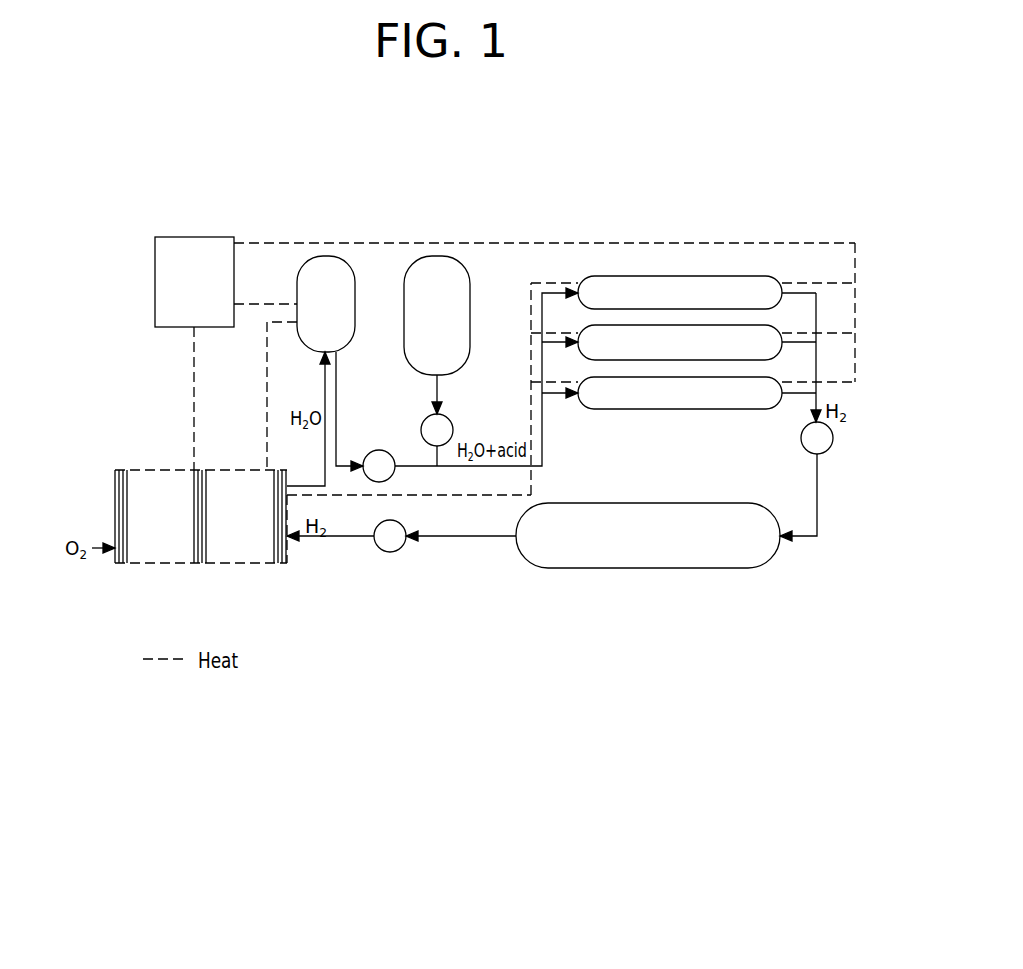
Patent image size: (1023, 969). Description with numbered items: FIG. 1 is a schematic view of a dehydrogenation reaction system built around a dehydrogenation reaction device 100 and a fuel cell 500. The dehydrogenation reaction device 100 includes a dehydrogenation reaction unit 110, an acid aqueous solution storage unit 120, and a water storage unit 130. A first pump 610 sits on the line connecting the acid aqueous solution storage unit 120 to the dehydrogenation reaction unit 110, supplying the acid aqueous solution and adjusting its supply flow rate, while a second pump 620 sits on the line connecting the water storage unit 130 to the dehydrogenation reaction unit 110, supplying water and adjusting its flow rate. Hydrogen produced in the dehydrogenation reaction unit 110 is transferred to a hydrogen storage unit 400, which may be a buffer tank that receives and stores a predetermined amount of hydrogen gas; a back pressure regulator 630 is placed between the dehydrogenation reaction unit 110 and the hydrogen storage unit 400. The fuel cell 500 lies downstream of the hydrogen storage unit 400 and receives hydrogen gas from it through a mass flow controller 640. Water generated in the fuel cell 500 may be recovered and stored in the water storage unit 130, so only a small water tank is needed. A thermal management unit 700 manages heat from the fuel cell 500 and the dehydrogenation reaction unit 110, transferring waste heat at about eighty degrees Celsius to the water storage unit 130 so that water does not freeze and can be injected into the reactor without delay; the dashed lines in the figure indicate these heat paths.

The dehydrogenation reaction device 100 is at (636, 429).
The dehydrogenation reaction unit 110 is at (700, 309).
The acid aqueous solution storage unit 120 is at (437, 256).
The water storage unit 130 is at (327, 256).
The hydrogen storage unit 400 is at (655, 569).
The fuel cell 500 is at (202, 565).
The first pump 610 is at (397, 474).
The second pump 620 is at (419, 419).
The back pressure regulator 630 is at (833, 448).
The mass flow controller 640 is at (390, 553).
The thermal management unit 700 is at (199, 237).